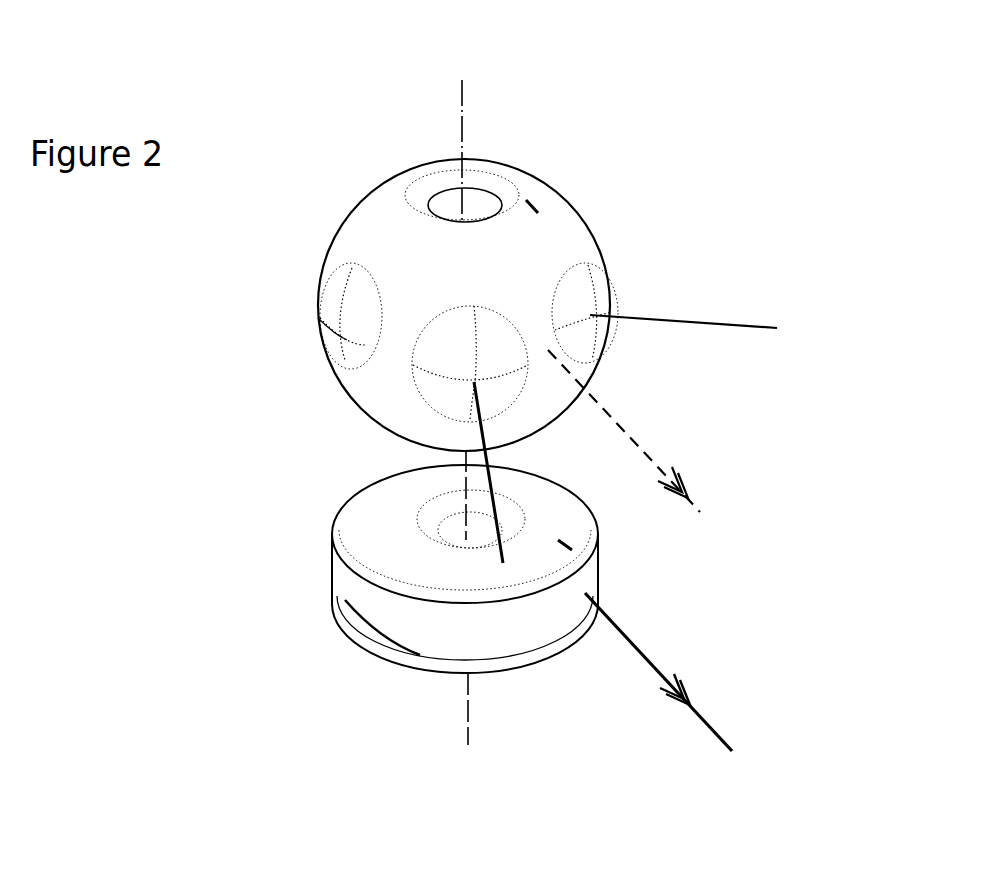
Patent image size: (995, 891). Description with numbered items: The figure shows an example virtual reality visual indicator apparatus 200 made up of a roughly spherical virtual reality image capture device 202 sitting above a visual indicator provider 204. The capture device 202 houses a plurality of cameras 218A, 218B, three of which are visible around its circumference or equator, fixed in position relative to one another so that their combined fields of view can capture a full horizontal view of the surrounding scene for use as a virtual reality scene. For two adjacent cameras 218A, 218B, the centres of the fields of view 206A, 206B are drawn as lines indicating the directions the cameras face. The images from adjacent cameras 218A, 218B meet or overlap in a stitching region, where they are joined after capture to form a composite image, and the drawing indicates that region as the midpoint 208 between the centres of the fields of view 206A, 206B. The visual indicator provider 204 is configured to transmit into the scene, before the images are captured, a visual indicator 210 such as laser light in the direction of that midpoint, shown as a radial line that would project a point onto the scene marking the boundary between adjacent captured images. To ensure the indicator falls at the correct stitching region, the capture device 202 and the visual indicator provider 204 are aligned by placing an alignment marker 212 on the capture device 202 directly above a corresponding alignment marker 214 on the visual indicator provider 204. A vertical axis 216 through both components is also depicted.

The virtual reality visual indicator apparatus 200 is at (322, 162).
The virtual reality image capture device 202 is at (380, 400).
The visual indicator provider 204 is at (352, 594).
The centre of the field of view 206A is at (720, 323).
The centre of the field of view 206B is at (492, 492).
The midpoint 208 is at (622, 427).
The visual indicator 210 is at (657, 666).
The alignment marker 212 is at (533, 205).
The alignment marker 214 is at (567, 540).
The central axis 216 is at (463, 115).
The camera 218A is at (578, 292).
The camera 218B is at (445, 325).